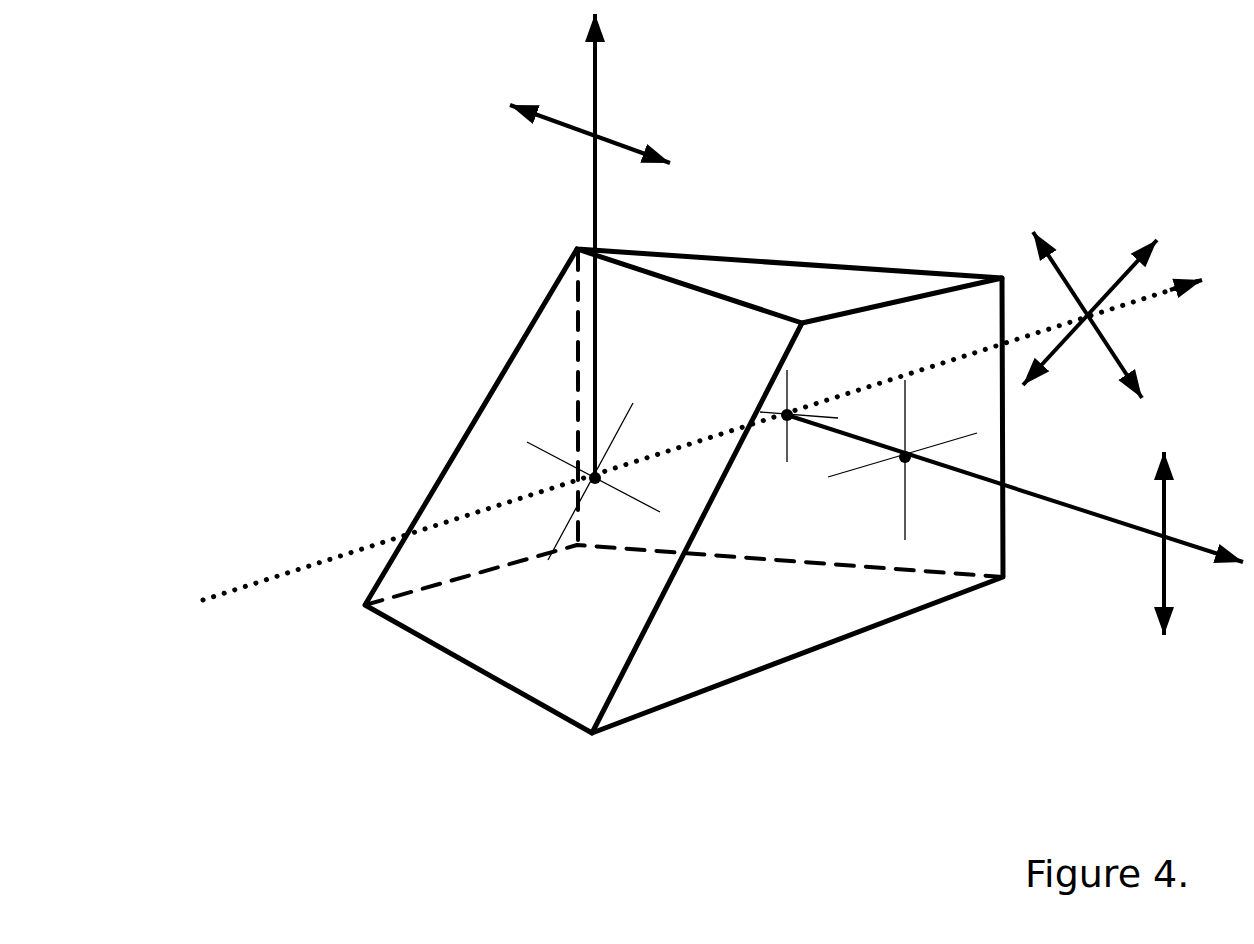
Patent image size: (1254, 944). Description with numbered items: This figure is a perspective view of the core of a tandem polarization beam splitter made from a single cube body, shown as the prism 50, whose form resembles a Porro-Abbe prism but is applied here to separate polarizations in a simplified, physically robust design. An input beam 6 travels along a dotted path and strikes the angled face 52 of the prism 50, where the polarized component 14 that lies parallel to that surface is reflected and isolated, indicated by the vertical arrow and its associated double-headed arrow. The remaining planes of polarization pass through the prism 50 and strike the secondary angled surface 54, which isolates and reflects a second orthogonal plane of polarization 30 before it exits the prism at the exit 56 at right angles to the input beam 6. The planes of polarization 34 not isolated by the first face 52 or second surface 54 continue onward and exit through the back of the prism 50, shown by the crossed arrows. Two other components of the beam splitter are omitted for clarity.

The input beam 6 is at (692, 440).
The polarized component 14 is at (590, 246).
The second orthogonal plane of polarization 30 is at (1020, 525).
The planes of polarization 34 is at (1090, 300).
The prism 50 is at (772, 667).
The angled face 52 is at (575, 478).
The secondary angled surface 54 is at (787, 415).
The prism exit 56 is at (905, 457).